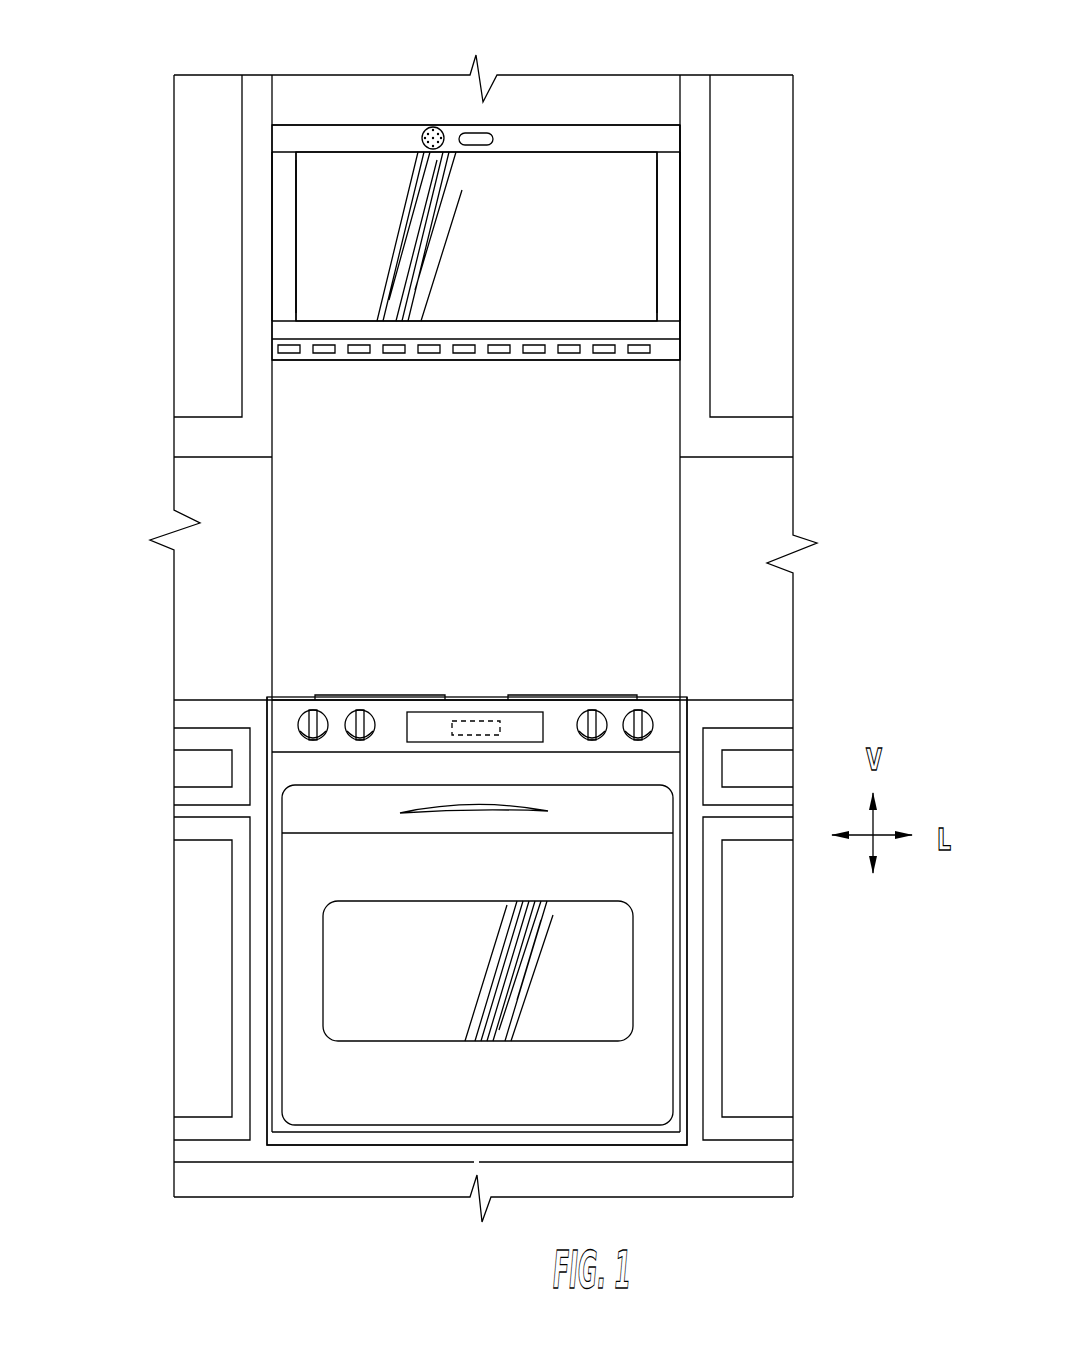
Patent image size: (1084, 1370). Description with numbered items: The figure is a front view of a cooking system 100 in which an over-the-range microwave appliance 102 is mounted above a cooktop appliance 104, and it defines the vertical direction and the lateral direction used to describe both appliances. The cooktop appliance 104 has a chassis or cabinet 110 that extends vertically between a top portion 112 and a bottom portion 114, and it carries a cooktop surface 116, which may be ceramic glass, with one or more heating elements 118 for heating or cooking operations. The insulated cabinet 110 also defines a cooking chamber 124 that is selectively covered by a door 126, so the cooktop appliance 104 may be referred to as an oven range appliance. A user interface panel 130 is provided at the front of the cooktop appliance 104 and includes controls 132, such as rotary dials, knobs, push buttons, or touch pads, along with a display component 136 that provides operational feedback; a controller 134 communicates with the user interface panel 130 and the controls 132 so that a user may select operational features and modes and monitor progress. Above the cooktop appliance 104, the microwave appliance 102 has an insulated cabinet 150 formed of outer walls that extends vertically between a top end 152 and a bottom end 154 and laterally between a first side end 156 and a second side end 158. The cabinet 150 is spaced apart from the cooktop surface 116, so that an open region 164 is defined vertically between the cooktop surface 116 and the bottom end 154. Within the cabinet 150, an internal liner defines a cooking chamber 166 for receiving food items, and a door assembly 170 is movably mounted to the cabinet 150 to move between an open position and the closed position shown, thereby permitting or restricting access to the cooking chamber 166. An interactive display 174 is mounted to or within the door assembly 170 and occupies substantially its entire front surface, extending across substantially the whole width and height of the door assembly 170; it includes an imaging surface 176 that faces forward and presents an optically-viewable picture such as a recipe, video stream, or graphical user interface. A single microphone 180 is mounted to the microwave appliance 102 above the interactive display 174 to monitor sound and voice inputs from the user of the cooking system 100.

The cooking system 100 is at (113, 139).
The microwave appliance 102 is at (666, 236).
The cooktop appliance 104 is at (256, 948).
The cabinet 110 is at (280, 1135).
The top portion 112 is at (263, 694).
The bottom portion 114 is at (322, 1150).
The cooktop surface 116 is at (296, 694).
The heating elements 118 is at (360, 698).
The cooking chamber 124 is at (432, 1002).
The door 126 is at (660, 975).
The user interface panel 130 is at (666, 708).
The controls 132 is at (637, 717).
The controller 134 is at (462, 719).
The display component 136 is at (518, 710).
The cabinet 150 is at (641, 175).
The top end 152 is at (360, 123).
The bottom end 154 is at (663, 365).
The first side end 156 is at (684, 308).
The second side end 158 is at (270, 293).
The open region 164 is at (420, 533).
The cooking chamber 166 is at (338, 199).
The door assembly 170 is at (635, 133).
The interactive display 174 is at (553, 170).
The imaging surface 176 is at (452, 298).
The microphone 180 is at (432, 127).